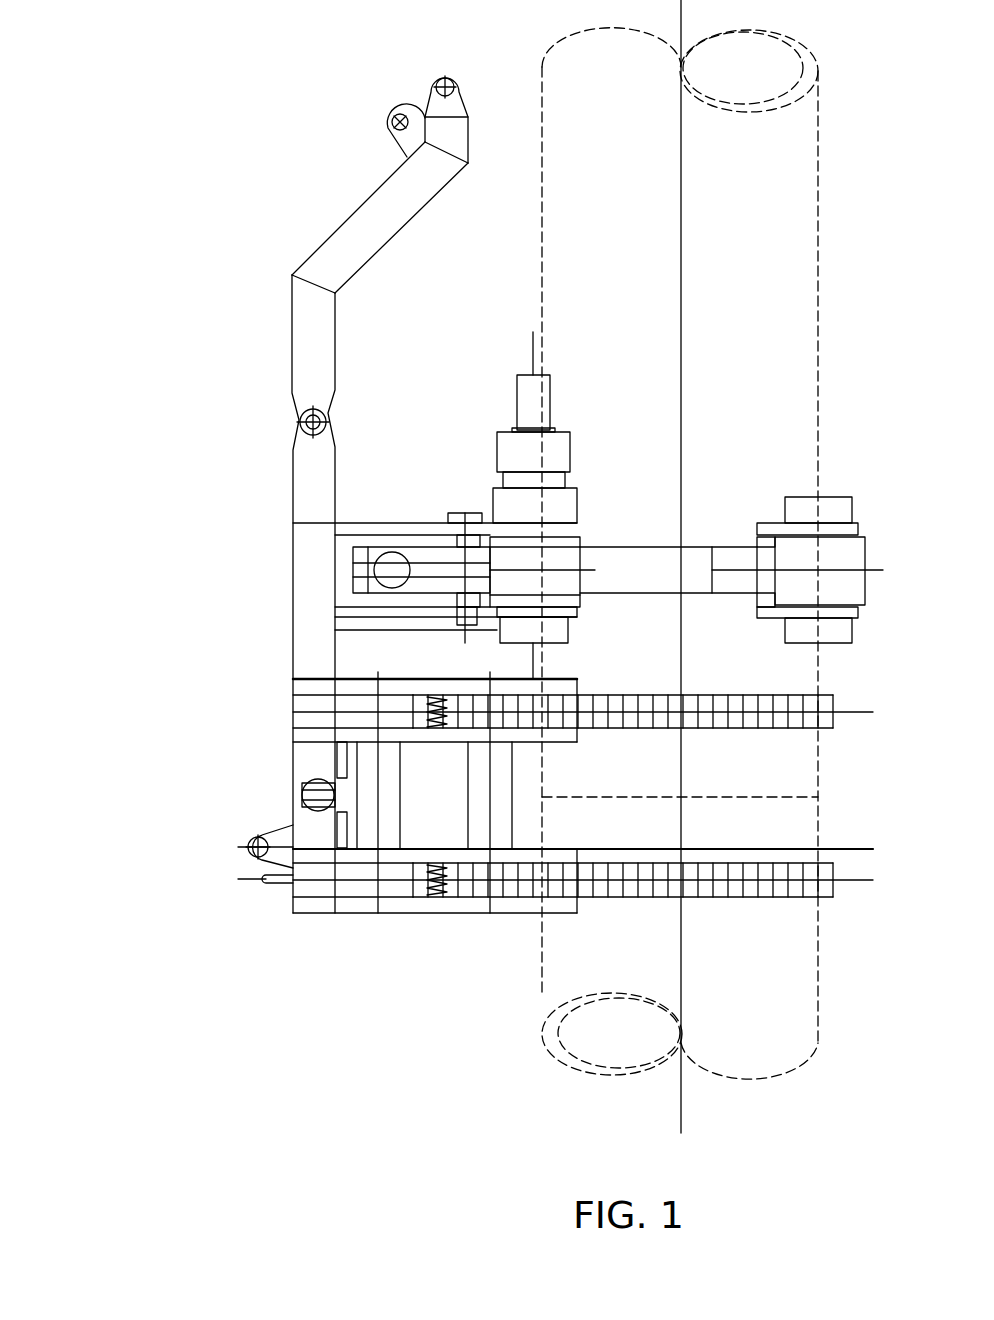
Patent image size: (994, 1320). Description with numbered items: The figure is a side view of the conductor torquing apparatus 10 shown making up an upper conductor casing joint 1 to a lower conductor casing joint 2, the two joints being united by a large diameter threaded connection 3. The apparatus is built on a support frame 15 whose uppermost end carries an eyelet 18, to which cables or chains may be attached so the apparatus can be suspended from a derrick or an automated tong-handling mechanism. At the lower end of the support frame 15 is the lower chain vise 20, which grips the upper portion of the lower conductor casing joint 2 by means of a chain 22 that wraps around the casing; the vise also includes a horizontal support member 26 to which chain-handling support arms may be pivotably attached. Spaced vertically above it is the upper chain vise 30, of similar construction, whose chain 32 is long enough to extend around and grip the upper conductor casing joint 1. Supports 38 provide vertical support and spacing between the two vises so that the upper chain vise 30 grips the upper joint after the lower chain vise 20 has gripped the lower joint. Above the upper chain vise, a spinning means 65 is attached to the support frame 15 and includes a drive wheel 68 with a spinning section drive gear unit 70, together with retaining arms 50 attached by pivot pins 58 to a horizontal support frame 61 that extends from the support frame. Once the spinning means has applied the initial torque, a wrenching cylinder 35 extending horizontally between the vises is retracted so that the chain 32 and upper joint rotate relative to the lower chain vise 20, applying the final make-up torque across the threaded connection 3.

The upper conductor casing joint 1 is at (803, 213).
The lower conductor casing joint 2 is at (803, 1035).
The threaded connection 3 is at (818, 797).
The conductor torquing apparatus 10 is at (133, 325).
The support frame 15 is at (297, 493).
The eyelet 18 is at (438, 73).
The lower chain vise 20 is at (383, 913).
The chain 22 is at (825, 893).
The horizontal support member 26 is at (438, 913).
The upper chain vise 30 is at (370, 678).
The chain 32 is at (832, 697).
The wrenching cylinder 35 is at (293, 797).
The supports 38 is at (468, 803).
The retaining arms 50 is at (652, 553).
The pivot pins 58 is at (465, 523).
The horizontal support frame 61 is at (397, 523).
The spinning means 65 is at (422, 473).
The drive wheel 68 is at (490, 605).
The spinning section drive gear unit 70 is at (507, 430).